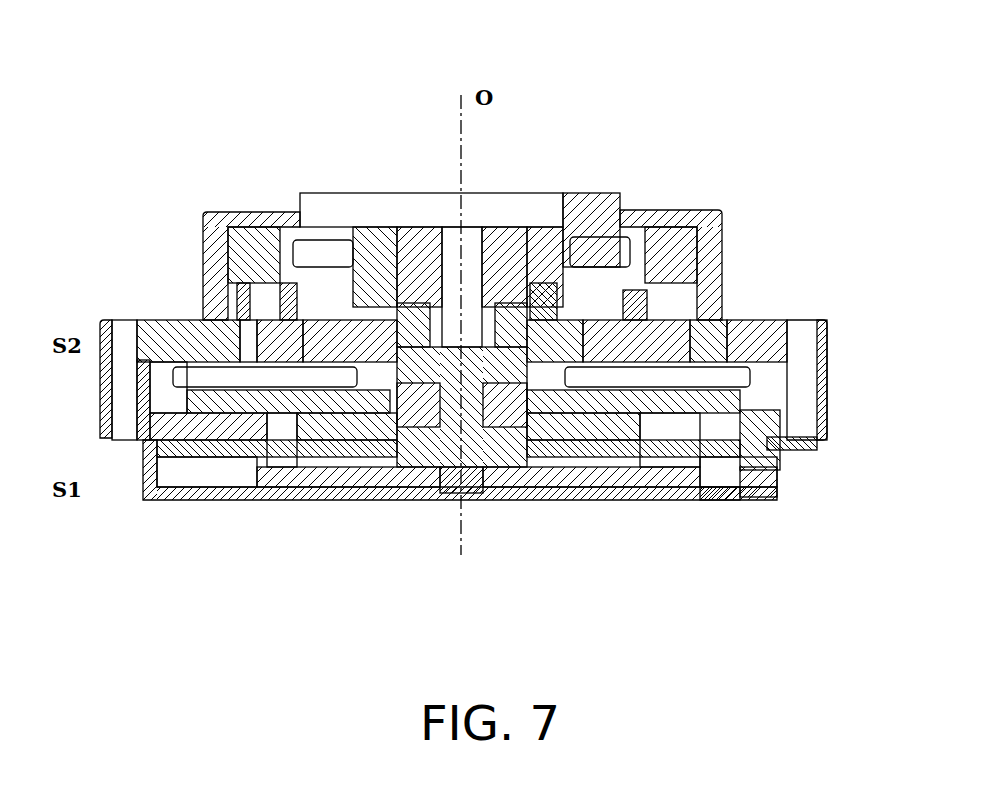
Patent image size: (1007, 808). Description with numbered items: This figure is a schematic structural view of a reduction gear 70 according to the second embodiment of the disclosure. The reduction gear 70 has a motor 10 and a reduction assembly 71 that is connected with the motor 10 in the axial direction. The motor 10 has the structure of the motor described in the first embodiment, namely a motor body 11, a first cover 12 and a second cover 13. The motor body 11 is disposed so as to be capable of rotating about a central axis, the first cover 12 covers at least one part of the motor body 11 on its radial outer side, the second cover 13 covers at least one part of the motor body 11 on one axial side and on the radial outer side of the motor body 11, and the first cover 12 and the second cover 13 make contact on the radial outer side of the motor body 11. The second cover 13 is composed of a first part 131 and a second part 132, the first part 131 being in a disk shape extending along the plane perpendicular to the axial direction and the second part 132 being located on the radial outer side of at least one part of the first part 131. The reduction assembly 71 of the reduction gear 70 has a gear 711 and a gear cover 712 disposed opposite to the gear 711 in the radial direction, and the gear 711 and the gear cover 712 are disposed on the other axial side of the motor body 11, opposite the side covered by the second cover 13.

The reduction gear 70 is at (128, 104).
The reduction assembly 71 is at (227, 317).
The gear 711 is at (630, 325).
The gear cover 712 is at (690, 327).
The motor 10 is at (238, 432).
The motor body 11 is at (390, 437).
The first cover 12 is at (830, 413).
The second cover 13 is at (750, 493).
The first part 131 is at (773, 457).
The second part 132 is at (727, 490).